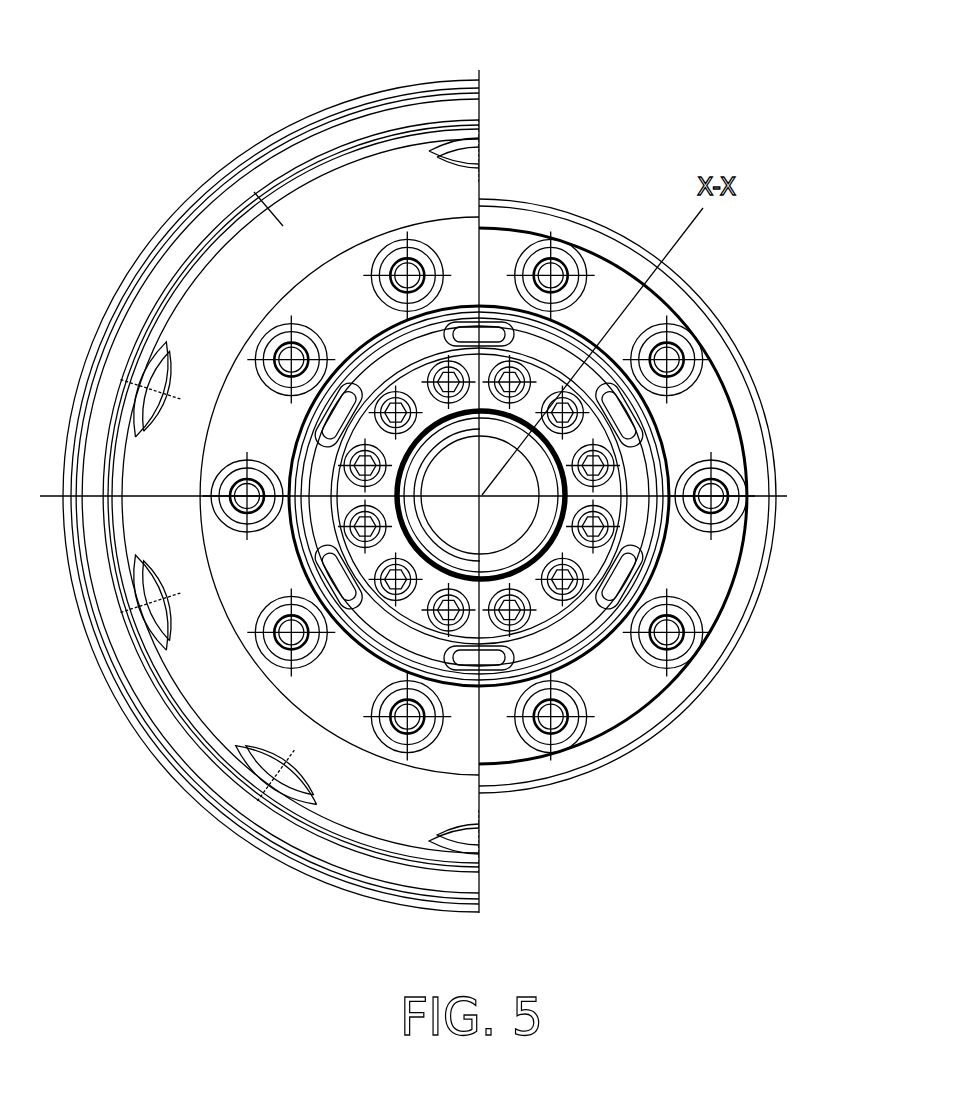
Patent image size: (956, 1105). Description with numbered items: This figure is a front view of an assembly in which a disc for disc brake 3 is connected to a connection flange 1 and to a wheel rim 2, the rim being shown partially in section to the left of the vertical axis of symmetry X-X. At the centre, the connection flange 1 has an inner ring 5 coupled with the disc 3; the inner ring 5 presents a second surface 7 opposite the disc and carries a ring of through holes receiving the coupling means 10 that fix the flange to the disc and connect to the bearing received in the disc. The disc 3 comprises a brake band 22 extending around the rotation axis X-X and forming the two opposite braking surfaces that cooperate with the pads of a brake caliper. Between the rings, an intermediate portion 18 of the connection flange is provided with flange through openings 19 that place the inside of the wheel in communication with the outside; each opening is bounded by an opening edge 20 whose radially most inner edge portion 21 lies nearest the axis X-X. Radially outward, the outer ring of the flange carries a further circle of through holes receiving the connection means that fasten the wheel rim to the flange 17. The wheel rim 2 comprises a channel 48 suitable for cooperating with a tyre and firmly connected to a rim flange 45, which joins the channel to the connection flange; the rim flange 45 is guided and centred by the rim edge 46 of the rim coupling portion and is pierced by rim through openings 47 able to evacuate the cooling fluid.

The connection flange 1 is at (545, 612).
The wheel rim 2 is at (468, 108).
The disc for disc brake 3 is at (690, 315).
The inner ring 5 is at (400, 380).
The second surface 7 is at (312, 438).
The coupling means 10 is at (623, 463).
The flange 17 is at (702, 347).
The intermediate portion 18 is at (293, 547).
The flange through openings 19 is at (680, 607).
The opening edge 20 is at (663, 565).
The radially most inner edge portion 21 is at (602, 630).
The brake band 22 is at (590, 243).
The rim flange 45 is at (232, 587).
The rim edge 46 is at (388, 660).
The rim through openings 47 is at (290, 793).
The channel 48 is at (408, 118).